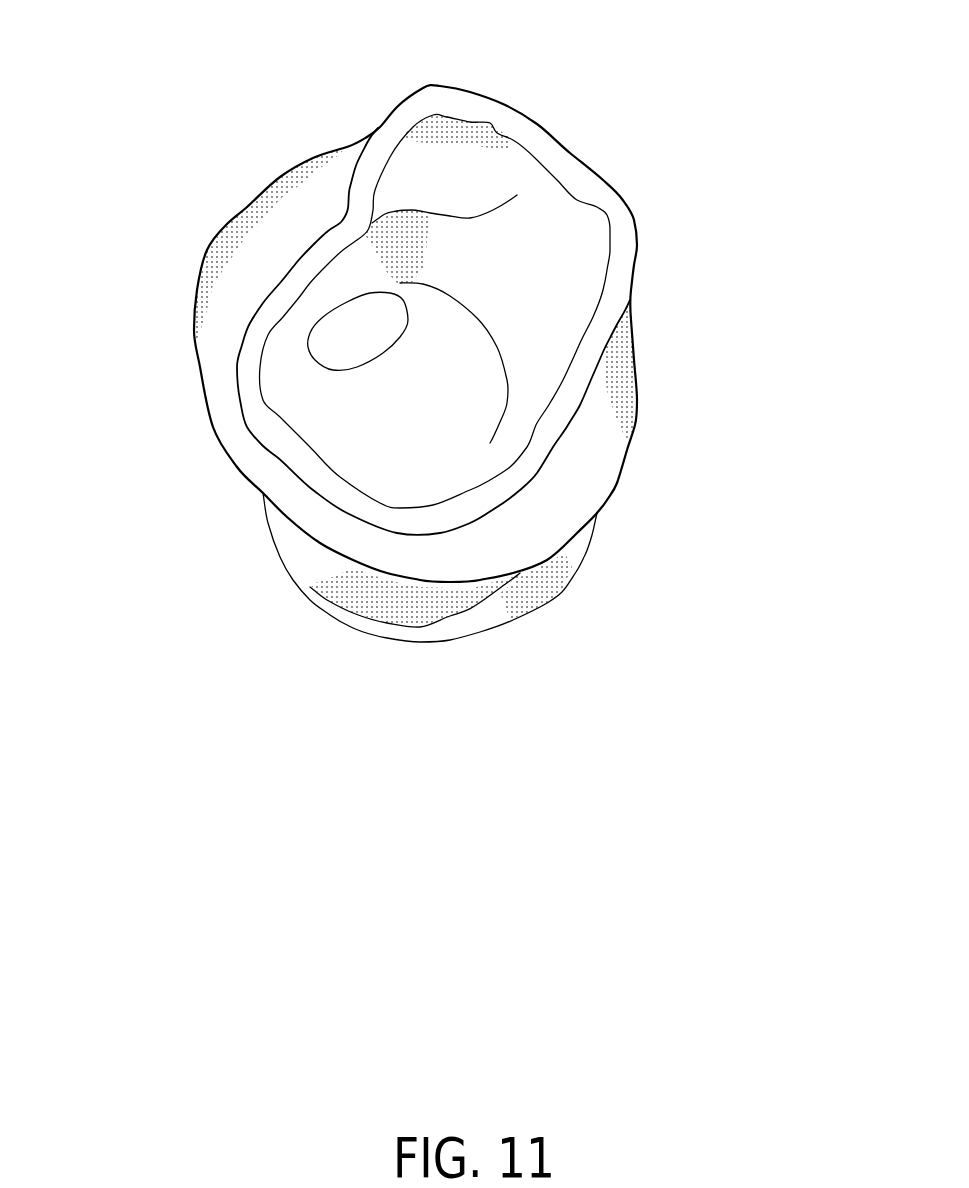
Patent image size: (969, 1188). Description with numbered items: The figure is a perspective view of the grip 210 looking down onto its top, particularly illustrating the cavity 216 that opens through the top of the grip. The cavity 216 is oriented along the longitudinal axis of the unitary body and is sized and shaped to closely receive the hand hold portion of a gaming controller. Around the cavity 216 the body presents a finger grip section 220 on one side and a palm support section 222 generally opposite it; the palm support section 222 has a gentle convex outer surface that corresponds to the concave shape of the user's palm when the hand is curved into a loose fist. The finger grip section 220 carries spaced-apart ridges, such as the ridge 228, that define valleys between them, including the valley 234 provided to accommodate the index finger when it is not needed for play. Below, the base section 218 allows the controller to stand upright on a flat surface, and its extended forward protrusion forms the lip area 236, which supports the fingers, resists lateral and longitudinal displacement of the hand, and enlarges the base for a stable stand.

The grip 210 is at (545, 87).
The cavity 216 is at (500, 263).
The base section 218 is at (423, 608).
The finger grip section 220 is at (357, 565).
The palm support section 222 is at (270, 231).
The ridge 228 is at (617, 485).
The valley 234 is at (597, 430).
The lip area 236 is at (293, 565).